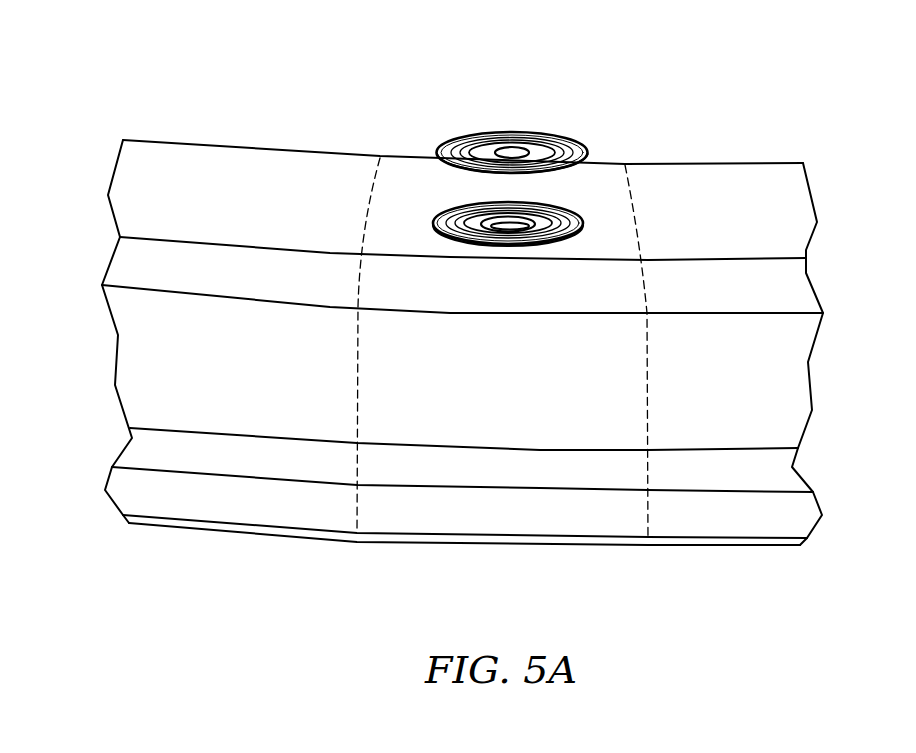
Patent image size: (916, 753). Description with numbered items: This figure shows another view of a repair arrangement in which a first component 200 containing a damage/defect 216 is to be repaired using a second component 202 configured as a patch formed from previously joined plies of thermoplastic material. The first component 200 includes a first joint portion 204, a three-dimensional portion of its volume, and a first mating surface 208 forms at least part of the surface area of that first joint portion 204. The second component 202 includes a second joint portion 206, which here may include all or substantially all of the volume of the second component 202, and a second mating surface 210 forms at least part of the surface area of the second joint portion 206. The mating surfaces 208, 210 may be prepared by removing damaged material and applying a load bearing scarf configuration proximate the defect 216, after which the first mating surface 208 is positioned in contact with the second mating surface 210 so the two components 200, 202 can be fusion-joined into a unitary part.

The first component 200 is at (830, 246).
The second component 202 is at (511, 103).
The first joint portion 204 is at (421, 426).
The second joint portion 206 is at (491, 119).
The first mating surface 208 is at (575, 286).
The second mating surface 210 is at (462, 178).
The damage/defect 216 is at (512, 232).